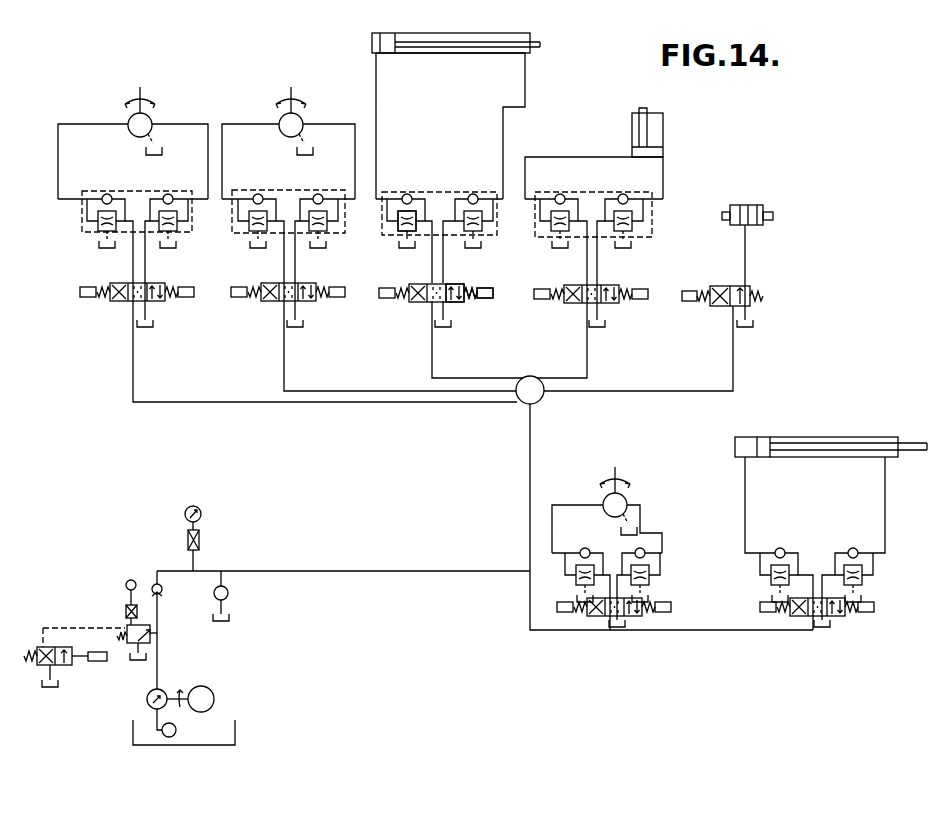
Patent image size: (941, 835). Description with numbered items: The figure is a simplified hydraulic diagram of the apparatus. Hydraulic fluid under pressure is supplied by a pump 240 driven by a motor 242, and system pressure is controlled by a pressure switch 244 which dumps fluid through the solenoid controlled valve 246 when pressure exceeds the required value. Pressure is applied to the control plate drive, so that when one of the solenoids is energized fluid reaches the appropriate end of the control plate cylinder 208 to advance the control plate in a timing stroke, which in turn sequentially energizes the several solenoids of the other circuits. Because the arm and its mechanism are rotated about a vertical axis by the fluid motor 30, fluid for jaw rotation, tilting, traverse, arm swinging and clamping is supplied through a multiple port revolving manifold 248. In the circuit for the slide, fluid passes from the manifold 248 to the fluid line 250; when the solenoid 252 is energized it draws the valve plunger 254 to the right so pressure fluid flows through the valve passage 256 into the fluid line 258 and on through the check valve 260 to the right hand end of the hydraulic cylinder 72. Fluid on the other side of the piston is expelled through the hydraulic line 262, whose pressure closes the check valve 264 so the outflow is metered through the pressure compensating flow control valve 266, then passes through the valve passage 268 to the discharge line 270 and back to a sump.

The hydraulic cylinder 72 is at (478, 55).
The hydraulic line 262 is at (377, 120).
The check valve 260 is at (468, 196).
The check valve 264 is at (410, 194).
The pressure compensating flow control valve 266 is at (395, 232).
The valve passage 268 is at (422, 282).
The fluid line 258 is at (446, 275).
The valve plunger 254 is at (462, 283).
The solenoid 252 is at (493, 285).
The valve passage 256 is at (420, 303).
The discharge line 270 is at (452, 317).
The fluid line 250 is at (434, 350).
The multiple port revolving manifold 248 is at (538, 401).
The fluid motor 30 is at (627, 500).
The hydraulic cylinder 208 is at (820, 458).
The pressure switch 244 is at (229, 596).
The solenoid controlled valve 246 is at (60, 667).
The pump 240 is at (147, 693).
The motor 242 is at (215, 698).